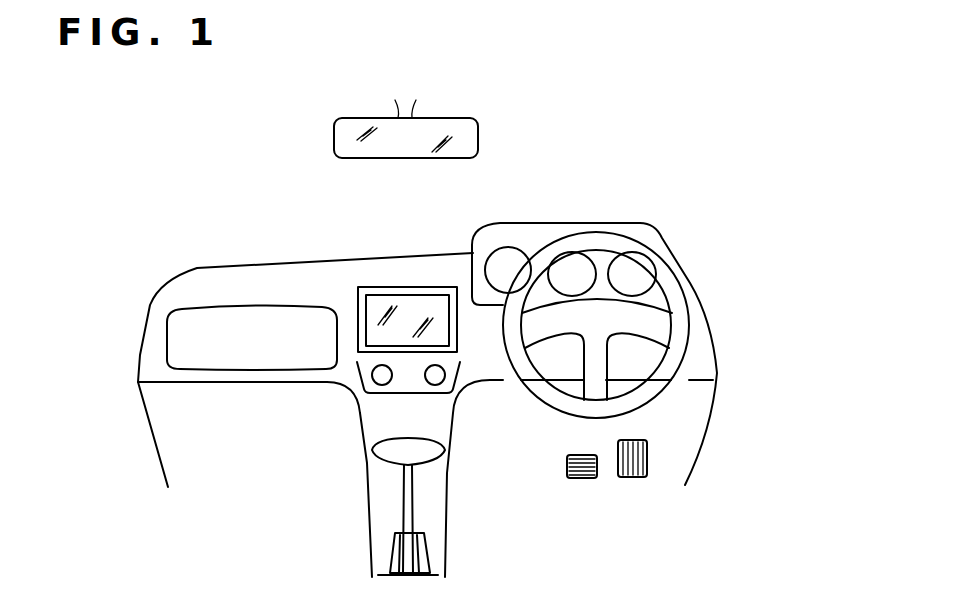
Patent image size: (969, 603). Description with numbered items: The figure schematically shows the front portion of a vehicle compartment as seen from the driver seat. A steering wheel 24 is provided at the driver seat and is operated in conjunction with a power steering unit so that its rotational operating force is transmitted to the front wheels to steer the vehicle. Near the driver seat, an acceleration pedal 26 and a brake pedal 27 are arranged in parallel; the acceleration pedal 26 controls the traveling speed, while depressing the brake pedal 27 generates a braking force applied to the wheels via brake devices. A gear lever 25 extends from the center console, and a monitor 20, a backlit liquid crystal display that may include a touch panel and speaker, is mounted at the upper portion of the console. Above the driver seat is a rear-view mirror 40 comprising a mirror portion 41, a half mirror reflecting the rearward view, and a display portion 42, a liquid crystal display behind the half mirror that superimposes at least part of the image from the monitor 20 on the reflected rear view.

The monitor 20 is at (412, 300).
The steering wheel 24 is at (680, 307).
The gear lever 25 is at (405, 450).
The acceleration pedal 26 is at (648, 458).
The brake pedal 27 is at (582, 455).
The rear-view mirror 40 is at (482, 130).
The mirror portion 41 is at (367, 134).
The display portion 42 is at (442, 144).